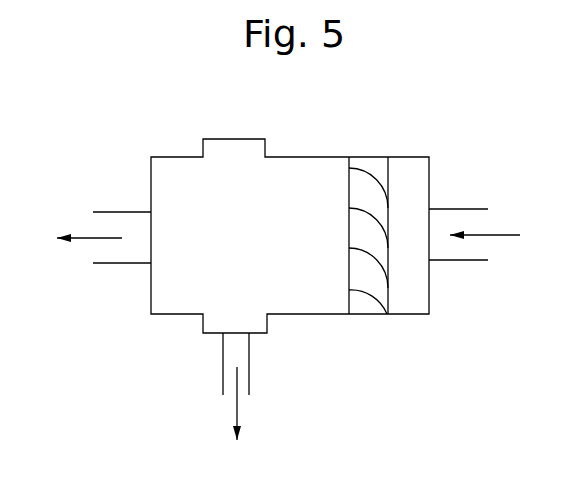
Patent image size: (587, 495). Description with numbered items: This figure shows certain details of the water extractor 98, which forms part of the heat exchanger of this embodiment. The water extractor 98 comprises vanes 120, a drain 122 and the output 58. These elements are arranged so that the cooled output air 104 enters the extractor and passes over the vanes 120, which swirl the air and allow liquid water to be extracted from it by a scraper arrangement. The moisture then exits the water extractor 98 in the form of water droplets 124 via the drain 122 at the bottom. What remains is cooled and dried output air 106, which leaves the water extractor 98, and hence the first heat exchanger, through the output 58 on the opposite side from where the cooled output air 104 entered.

The water extractor 98 is at (160, 133).
The vanes 120 is at (370, 212).
The output 58 is at (125, 265).
The cooled and dried output air 106 is at (85, 237).
The cooled output air 104 is at (500, 232).
The drain 122 is at (250, 367).
The water droplets 124 is at (238, 408).